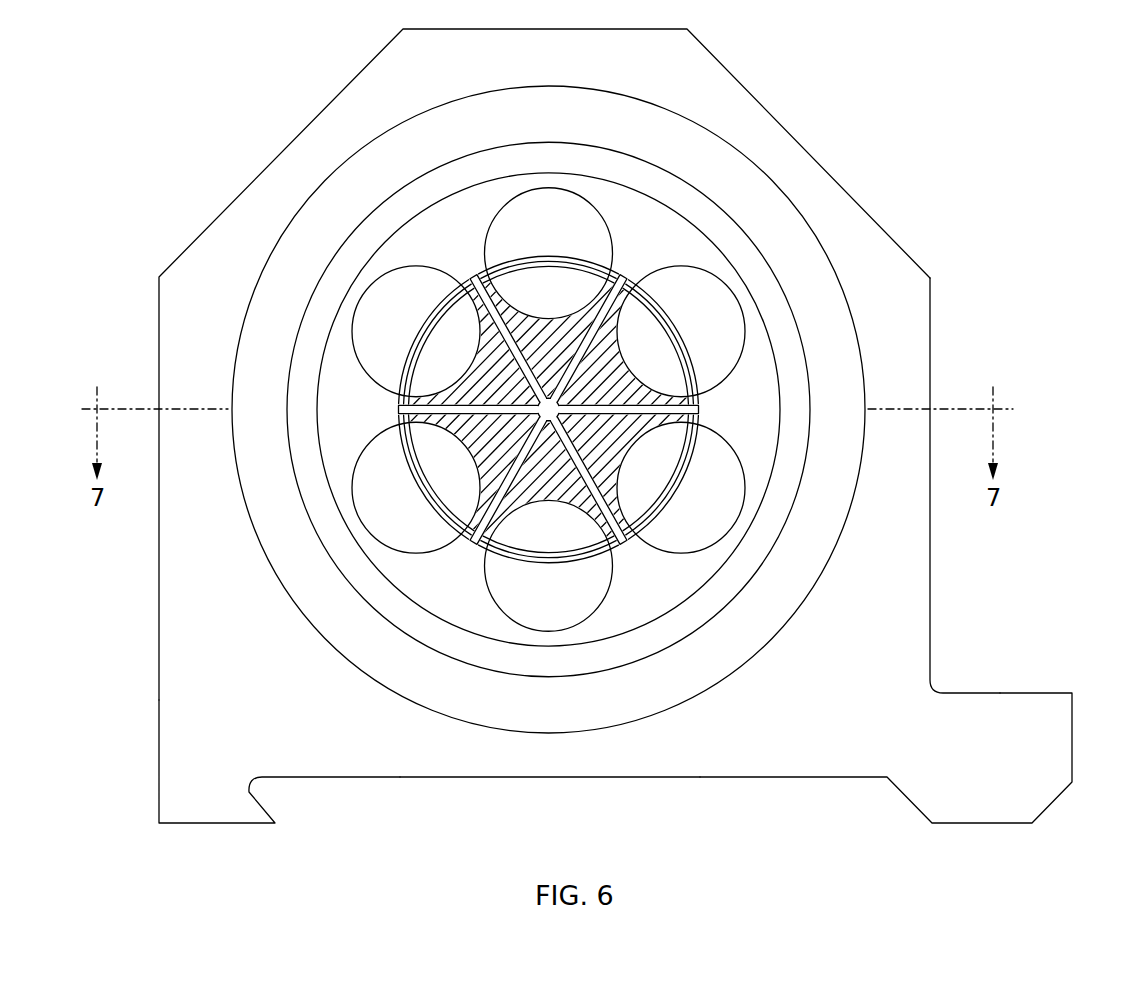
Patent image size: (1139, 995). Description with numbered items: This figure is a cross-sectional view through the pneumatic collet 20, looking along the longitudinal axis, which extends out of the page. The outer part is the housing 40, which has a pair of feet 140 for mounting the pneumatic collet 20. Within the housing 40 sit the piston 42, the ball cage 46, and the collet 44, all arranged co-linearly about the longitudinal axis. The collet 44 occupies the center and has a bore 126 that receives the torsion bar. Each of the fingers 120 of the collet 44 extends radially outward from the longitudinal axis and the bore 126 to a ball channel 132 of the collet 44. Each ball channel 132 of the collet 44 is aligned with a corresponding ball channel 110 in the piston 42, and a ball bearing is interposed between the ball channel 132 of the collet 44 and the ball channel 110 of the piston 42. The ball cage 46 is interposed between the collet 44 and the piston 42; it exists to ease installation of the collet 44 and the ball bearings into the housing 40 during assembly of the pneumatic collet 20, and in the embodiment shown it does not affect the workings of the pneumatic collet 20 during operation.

The pneumatic collet 20 is at (877, 159).
The housing 40 is at (908, 620).
The piston 42 is at (813, 280).
The collet 44 is at (472, 376).
The ball cage 46 is at (466, 272).
The ball channel 110 is at (550, 628).
The fingers 120 is at (612, 270).
The bore 126 is at (545, 422).
The ball channel 132 is at (508, 493).
The feet 140 is at (174, 763).